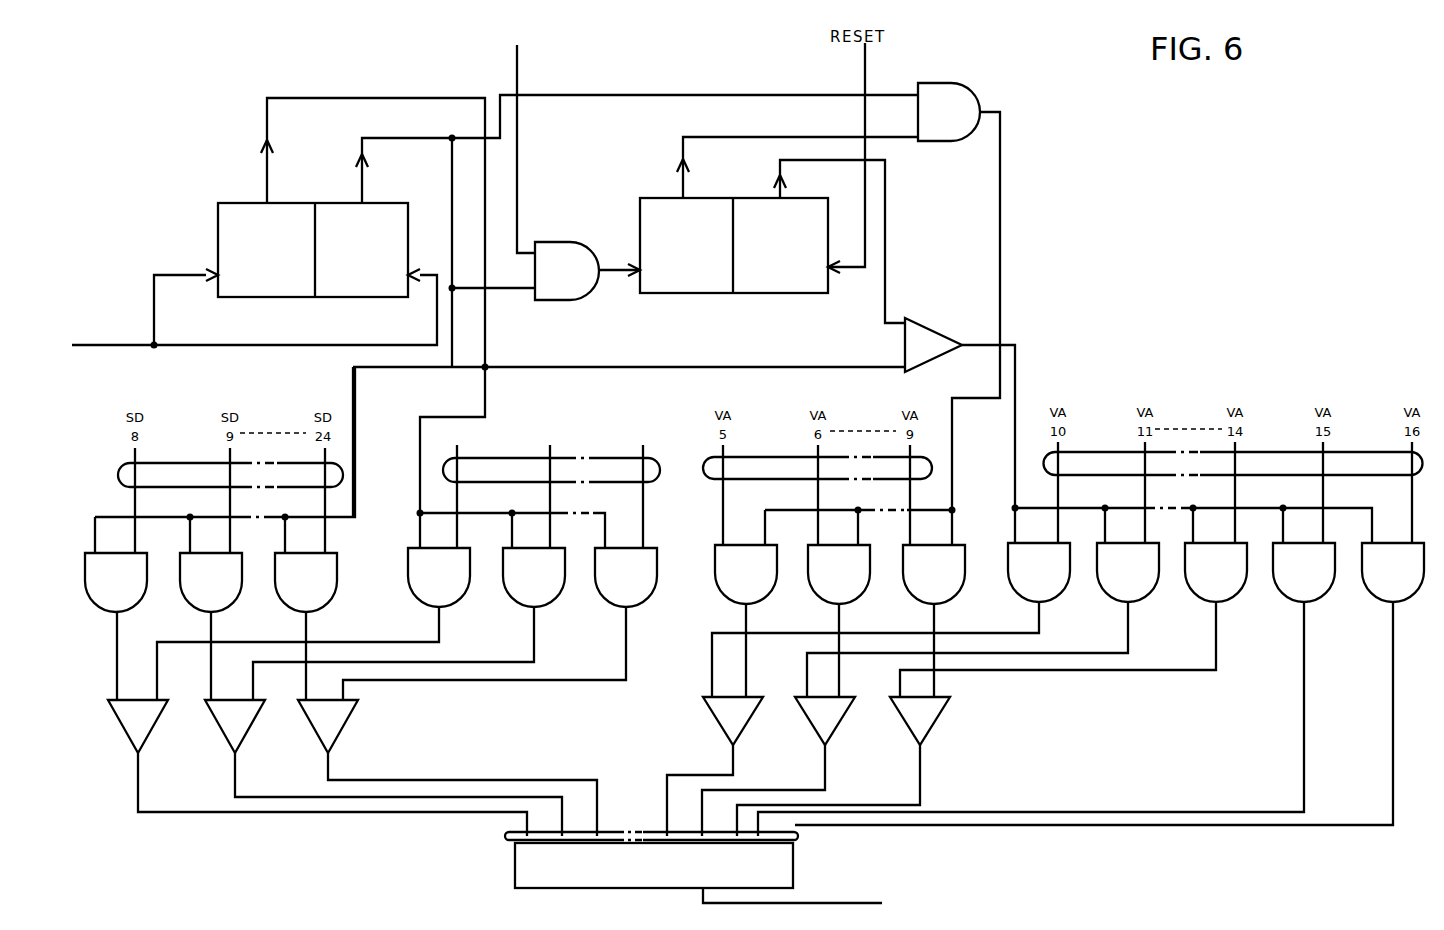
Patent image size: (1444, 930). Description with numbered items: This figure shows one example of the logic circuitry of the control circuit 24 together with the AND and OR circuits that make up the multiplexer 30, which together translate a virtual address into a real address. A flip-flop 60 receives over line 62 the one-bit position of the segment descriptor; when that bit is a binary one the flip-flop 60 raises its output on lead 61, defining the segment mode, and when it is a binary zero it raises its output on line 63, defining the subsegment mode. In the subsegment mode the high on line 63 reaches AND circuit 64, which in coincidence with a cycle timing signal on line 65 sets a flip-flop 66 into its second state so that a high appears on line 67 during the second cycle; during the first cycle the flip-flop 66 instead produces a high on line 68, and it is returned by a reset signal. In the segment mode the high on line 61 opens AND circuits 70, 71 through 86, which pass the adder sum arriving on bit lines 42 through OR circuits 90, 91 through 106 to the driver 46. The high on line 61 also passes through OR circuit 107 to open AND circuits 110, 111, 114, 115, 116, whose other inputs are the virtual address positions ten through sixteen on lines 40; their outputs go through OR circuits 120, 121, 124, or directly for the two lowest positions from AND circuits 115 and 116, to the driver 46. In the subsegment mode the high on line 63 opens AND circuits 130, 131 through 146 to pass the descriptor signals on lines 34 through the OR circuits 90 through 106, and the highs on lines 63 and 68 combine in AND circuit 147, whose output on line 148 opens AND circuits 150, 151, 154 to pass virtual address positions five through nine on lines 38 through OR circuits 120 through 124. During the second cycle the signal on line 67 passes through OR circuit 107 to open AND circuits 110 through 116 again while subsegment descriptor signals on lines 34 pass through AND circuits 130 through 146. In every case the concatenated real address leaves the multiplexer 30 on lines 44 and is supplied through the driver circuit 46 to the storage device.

The control circuit 24 is at (1040, 164).
The multiplexer 30 is at (105, 508).
The lines 34 is at (118, 472).
The lines 38 is at (705, 457).
The lines 40 is at (1094, 452).
The bit lines 42 is at (500, 458).
The lines 44 is at (505, 836).
The driver 46 is at (793, 862).
The flip-flop 60 is at (232, 203).
The lead 61 is at (277, 98).
The input line 62 is at (97, 345).
The line 63 is at (362, 182).
The AND circuit 64 is at (562, 300).
The line 65 is at (519, 148).
The flip-flop 66 is at (684, 293).
The line 67 is at (797, 158).
The line 68 is at (696, 137).
The AND circuit 70 is at (420, 600).
The AND circuit 71 is at (512, 600).
The AND circuit 86 is at (612, 598).
The OR circuit 90 is at (130, 727).
The OR circuit 91 is at (222, 727).
The OR circuit 106 is at (318, 727).
The OR circuit 107 is at (922, 326).
The AND circuit 110 is at (1012, 588).
The AND circuit 111 is at (1103, 588).
The AND circuit 114 is at (1197, 588).
The AND circuit 115 is at (1285, 588).
The AND circuit 116 is at (1377, 588).
The OR circuit 120 is at (712, 718).
The OR circuit 121 is at (805, 718).
The OR circuit 124 is at (900, 718).
The AND circuit 130 is at (92, 602).
The AND circuit 131 is at (192, 605).
The AND circuit 146 is at (296, 604).
The AND circuit 147 is at (935, 143).
The line 148 is at (1002, 283).
The AND circuit 150 is at (730, 596).
The AND circuit 151 is at (820, 597).
The AND circuit 154 is at (925, 596).